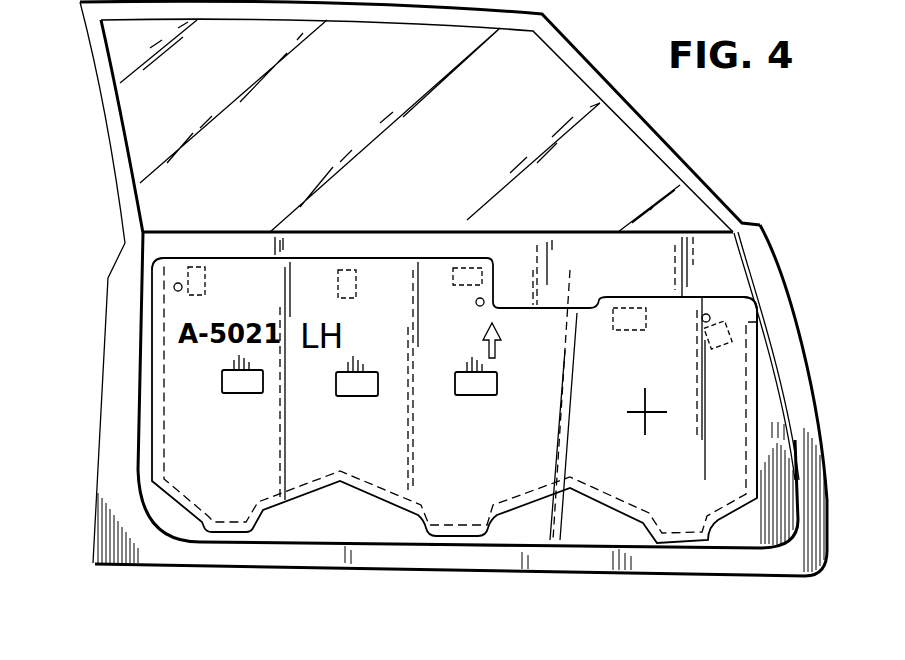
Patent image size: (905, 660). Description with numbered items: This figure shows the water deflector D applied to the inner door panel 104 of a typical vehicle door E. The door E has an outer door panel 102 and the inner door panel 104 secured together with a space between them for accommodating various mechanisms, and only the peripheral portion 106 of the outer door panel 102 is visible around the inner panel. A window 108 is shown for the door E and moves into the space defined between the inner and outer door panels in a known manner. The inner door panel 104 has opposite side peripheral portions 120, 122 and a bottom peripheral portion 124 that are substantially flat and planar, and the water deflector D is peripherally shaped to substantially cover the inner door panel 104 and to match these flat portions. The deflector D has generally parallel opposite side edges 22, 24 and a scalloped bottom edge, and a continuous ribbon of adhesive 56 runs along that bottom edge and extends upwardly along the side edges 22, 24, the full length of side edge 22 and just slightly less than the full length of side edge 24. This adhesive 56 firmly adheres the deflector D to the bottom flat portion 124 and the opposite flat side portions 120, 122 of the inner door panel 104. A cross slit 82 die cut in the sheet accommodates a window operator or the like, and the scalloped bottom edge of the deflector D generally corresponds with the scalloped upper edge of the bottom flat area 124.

The window 108 is at (650, 122).
The vehicle door E is at (772, 244).
The side peripheral portion 120 is at (147, 300).
The outer door panel 102 is at (108, 323).
The side edge 22 is at (150, 368).
The peripheral portion of outer door panel 106 is at (120, 435).
The inner door panel 104 is at (147, 515).
The adhesive 56 is at (160, 428).
The side edge 24 is at (760, 348).
The side peripheral portion 122 is at (770, 408).
The water deflector D is at (762, 452).
The cross slit 82 is at (633, 408).
The bottom peripheral portion 124 is at (563, 527).